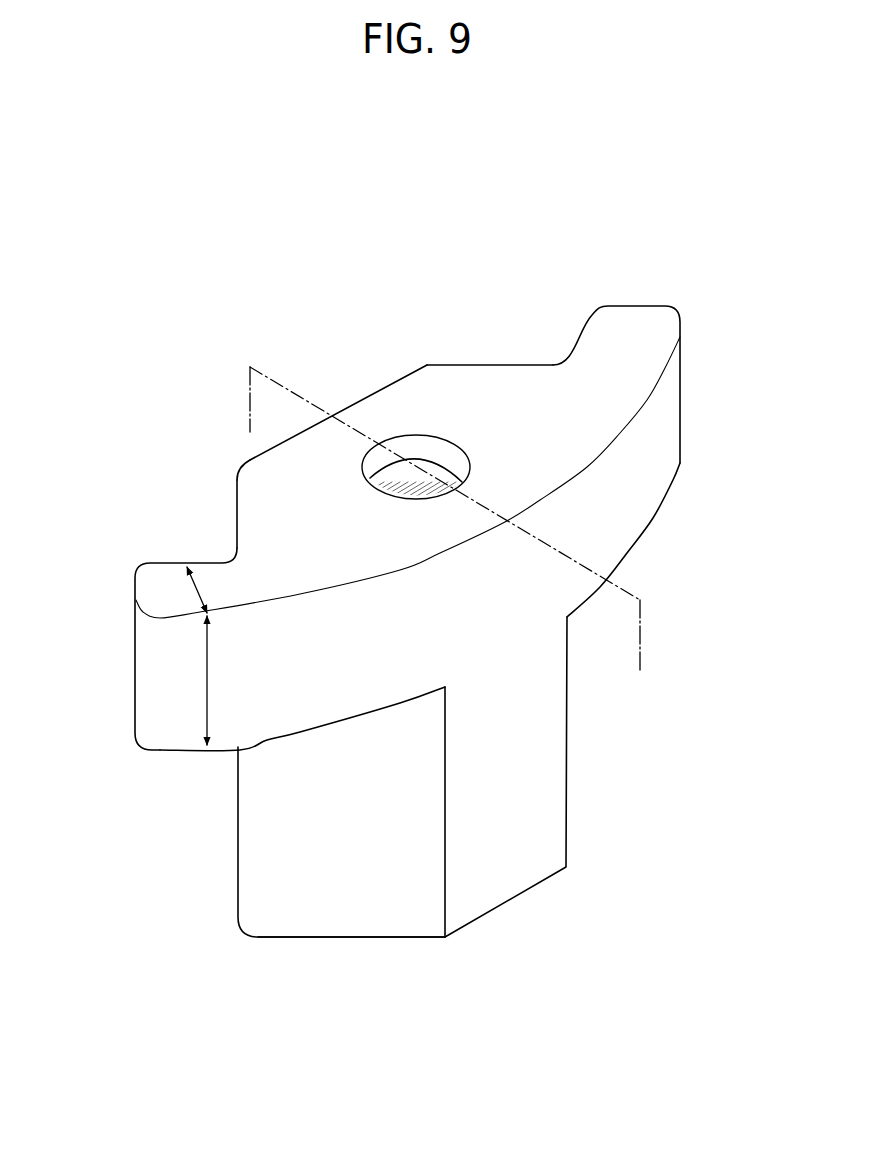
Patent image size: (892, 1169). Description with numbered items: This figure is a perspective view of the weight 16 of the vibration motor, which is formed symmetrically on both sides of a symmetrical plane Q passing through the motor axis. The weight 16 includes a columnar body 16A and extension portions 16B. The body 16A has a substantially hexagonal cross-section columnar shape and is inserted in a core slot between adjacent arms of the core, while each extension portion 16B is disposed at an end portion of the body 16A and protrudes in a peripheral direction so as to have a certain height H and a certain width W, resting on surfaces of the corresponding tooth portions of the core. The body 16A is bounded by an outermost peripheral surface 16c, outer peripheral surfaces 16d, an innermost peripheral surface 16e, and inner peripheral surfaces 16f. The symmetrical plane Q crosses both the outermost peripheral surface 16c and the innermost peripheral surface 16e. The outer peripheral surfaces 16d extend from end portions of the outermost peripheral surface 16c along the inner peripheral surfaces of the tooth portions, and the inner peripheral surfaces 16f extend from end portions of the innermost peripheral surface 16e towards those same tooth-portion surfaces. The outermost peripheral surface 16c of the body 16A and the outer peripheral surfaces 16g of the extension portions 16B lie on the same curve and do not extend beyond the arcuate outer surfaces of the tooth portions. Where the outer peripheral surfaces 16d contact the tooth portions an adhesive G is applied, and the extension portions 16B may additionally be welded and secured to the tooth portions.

The weight 16 is at (437, 599).
The body 16A is at (347, 413).
The extension portions 16B is at (600, 317).
The outermost peripheral surface 16c is at (557, 732).
The outer peripheral surfaces 16d is at (348, 927).
The innermost peripheral surface 16e is at (368, 393).
The inner peripheral surfaces 16f is at (485, 362).
The outer peripheral surfaces 16g is at (670, 420).
The adhesive G is at (367, 825).
The symmetrical plane Q is at (641, 598).
The width W is at (210, 590).
The height H is at (219, 680).